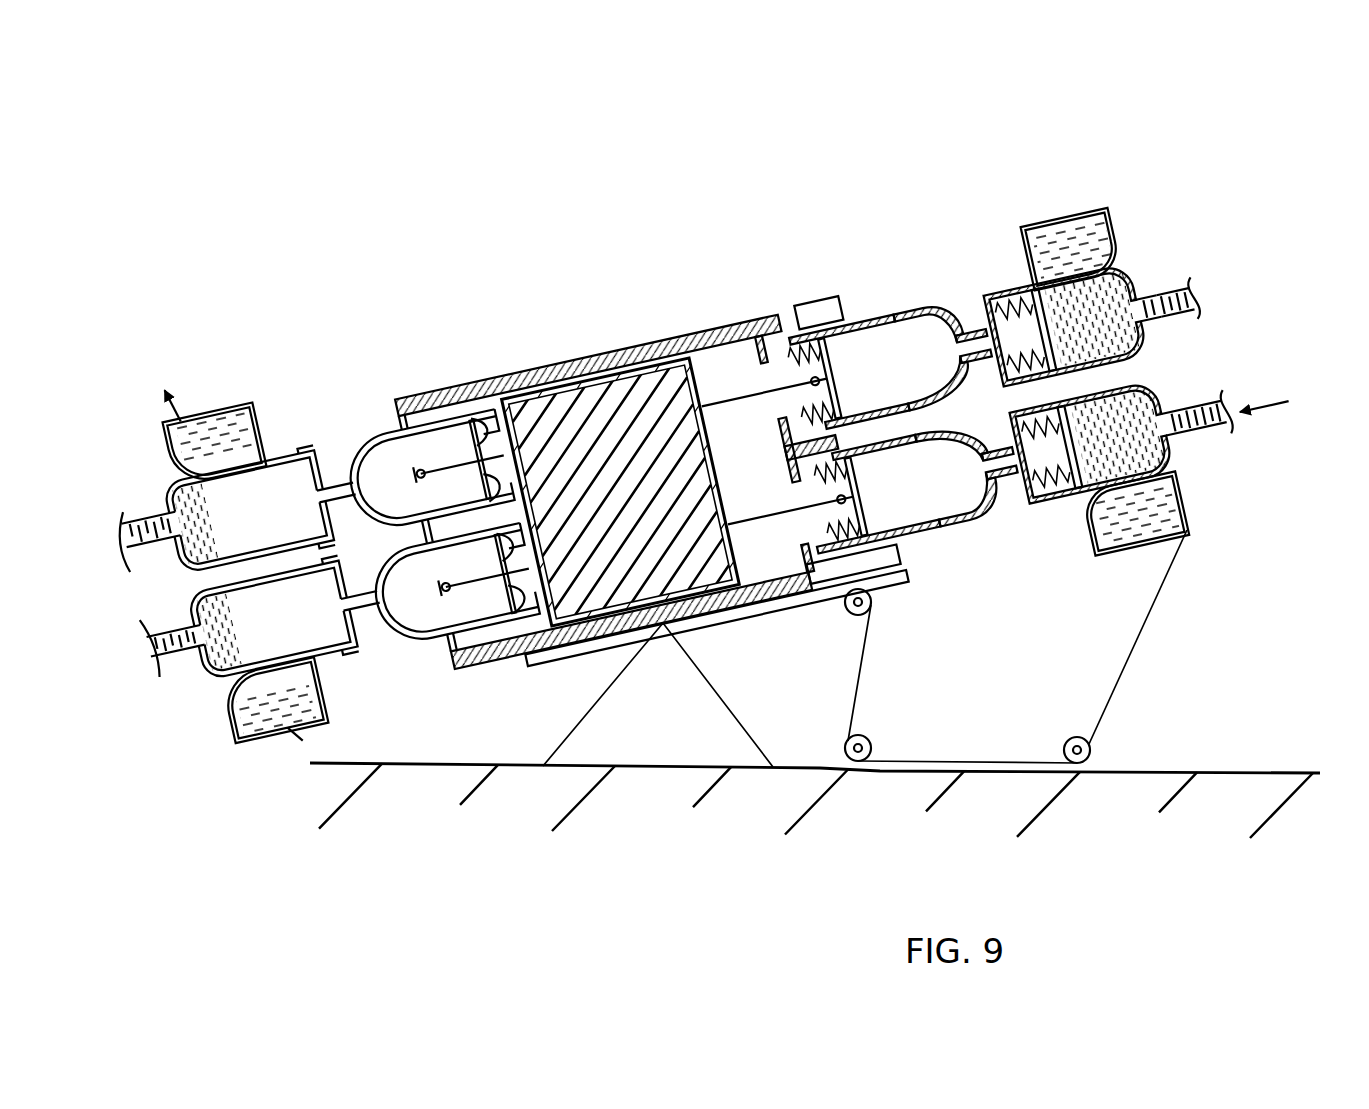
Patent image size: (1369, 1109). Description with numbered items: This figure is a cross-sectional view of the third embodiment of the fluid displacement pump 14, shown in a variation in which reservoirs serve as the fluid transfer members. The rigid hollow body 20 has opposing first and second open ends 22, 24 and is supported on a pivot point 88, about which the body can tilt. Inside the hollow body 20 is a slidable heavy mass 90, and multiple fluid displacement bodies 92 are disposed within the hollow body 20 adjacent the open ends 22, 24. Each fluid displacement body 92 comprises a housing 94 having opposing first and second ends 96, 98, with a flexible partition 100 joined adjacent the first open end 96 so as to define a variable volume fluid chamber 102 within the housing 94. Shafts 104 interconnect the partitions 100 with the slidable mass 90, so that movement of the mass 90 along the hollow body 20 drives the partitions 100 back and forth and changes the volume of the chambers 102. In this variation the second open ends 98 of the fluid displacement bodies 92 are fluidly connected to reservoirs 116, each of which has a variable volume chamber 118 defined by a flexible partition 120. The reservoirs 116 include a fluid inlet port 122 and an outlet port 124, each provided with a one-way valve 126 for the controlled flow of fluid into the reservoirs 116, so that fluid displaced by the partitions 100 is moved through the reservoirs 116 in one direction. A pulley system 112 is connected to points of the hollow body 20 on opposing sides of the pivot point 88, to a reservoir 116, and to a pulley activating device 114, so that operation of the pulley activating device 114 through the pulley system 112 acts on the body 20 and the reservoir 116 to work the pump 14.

The fluid displacement pump 14 is at (244, 310).
The hollow body 20 is at (616, 348).
The first open end 22 is at (400, 425).
The second open end 24 is at (835, 300).
The pivot point 88 is at (678, 753).
The slidable heavy mass 90 is at (525, 418).
The fluid displacement body 92 is at (918, 308).
The housing 94 is at (857, 323).
The first open end 96 is at (767, 335).
The second open end 98 is at (978, 330).
The flexible partition 100 is at (810, 337).
The variable volume fluid chamber 102 is at (948, 515).
The shaft 104 is at (728, 398).
The pulley system 112 is at (845, 772).
The pulley activating device 114 is at (1093, 773).
The reservoir 116 is at (1120, 263).
The variable volume chamber 118 is at (1022, 292).
The flexible partition 120 is at (1005, 300).
The fluid inlet port 122 is at (1195, 305).
The outlet port 124 is at (1077, 300).
The one-way valve 126 is at (1163, 297).